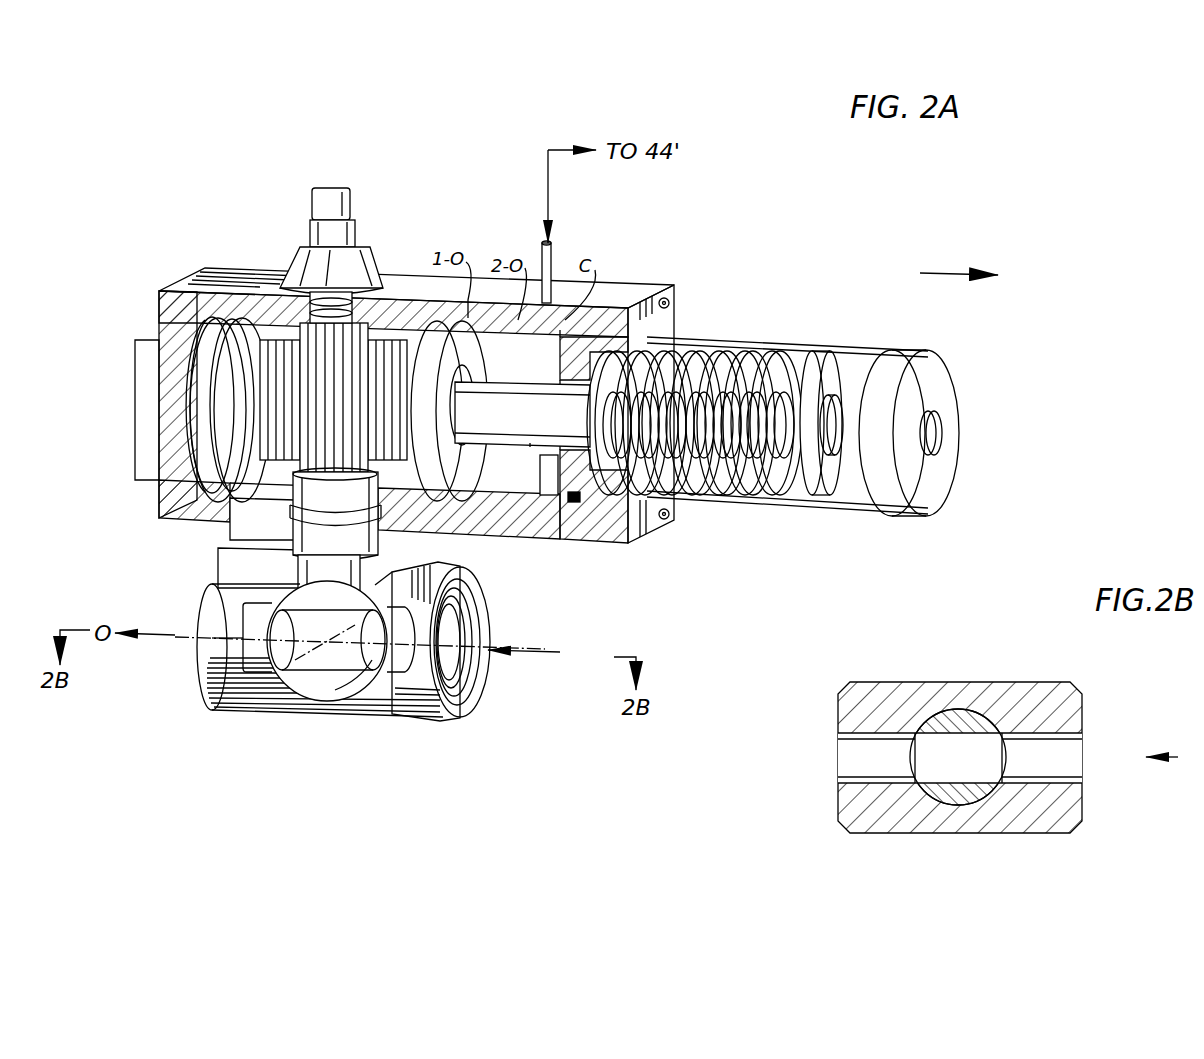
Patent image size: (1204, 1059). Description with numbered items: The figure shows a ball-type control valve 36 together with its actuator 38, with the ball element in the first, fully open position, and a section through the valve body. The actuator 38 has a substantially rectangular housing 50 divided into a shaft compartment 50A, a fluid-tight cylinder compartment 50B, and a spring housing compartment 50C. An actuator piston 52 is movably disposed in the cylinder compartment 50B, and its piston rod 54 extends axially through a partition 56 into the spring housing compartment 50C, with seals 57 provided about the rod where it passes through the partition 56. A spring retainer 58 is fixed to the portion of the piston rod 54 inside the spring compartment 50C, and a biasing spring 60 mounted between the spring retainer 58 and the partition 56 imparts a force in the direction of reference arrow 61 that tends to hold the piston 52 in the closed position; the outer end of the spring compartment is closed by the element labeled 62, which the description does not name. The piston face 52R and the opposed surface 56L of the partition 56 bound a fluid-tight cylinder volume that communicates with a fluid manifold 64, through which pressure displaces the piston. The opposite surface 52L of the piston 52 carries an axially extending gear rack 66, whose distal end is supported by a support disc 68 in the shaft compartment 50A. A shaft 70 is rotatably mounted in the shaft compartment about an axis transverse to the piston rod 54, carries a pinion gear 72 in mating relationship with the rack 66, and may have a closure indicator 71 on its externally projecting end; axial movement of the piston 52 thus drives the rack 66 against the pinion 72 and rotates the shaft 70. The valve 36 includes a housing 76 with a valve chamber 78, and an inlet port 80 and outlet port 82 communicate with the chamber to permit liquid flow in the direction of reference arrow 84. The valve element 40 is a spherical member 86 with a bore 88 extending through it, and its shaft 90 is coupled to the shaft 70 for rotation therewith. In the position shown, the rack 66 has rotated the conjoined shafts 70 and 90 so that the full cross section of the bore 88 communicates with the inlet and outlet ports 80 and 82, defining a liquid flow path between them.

In FIG. 2A, the control valve 36 is at (372, 705).
In FIG. 2B, the control valve 36 is at (1055, 835).
In FIG. 2A, the actuator 38 is at (657, 284).
In FIG. 2A, the ball-type valve element 40 is at (352, 670).
In FIG. 2B, the ball-type valve element 40 is at (940, 705).
In FIG. 2A, the housing 50 is at (425, 290).
In FIG. 2A, the shaft compartment 50A is at (318, 497).
In FIG. 2A, the cylinder compartment 50B is at (548, 483).
In FIG. 2A, the spring housing compartment 50C is at (862, 497).
In FIG. 2A, the actuator piston 52 is at (478, 465).
In FIG. 2A, the opposite surface of the piston 52L is at (378, 335).
In FIG. 2A, the piston face 52R is at (470, 330).
In FIG. 2A, the piston rod 54 is at (530, 447).
In FIG. 2A, the partition 56 is at (638, 527).
In FIG. 2A, the opposed surface of the partition 56L is at (570, 360).
In FIG. 2A, the seals 57 is at (577, 503).
In FIG. 2A, the spring retainer 58 is at (858, 373).
In FIG. 2A, the biasing spring 60 is at (785, 363).
In FIG. 2A, the reference arrow 61 is at (962, 273).
In FIG. 2A, the end cap 62 is at (950, 392).
In FIG. 2A, the fluid manifold 64 is at (553, 263).
In FIG. 2A, the gear rack 66 is at (282, 335).
In FIG. 2A, the support disc 68 is at (243, 377).
In FIG. 2A, the shaft 70 is at (322, 537).
In FIG. 2A, the closure indicator 71 is at (293, 250).
In FIG. 2A, the pinion gear 72 is at (315, 437).
In FIG. 2A, the housing 76 is at (235, 715).
In FIG. 2A, the valve chamber 78 is at (343, 683).
In FIG. 2B, the valve chamber 78 is at (975, 800).
In FIG. 2A, the valve inlet port 80 is at (470, 725).
In FIG. 2B, the valve inlet port 80 is at (1085, 740).
In FIG. 2A, the outlet port 82 is at (210, 660).
In FIG. 2B, the outlet port 82 is at (855, 738).
In FIG. 2A, the reference arrow 84 is at (556, 652).
In FIG. 2B, the reference arrow 84 is at (1178, 757).
In FIG. 2A, the spherical member 86 is at (292, 680).
In FIG. 2B, the spherical member 86 is at (975, 720).
In FIG. 2A, the bore 88 is at (405, 705).
In FIG. 2B, the bore 88 is at (990, 745).
In FIG. 2A, the shaft 90 is at (258, 548).